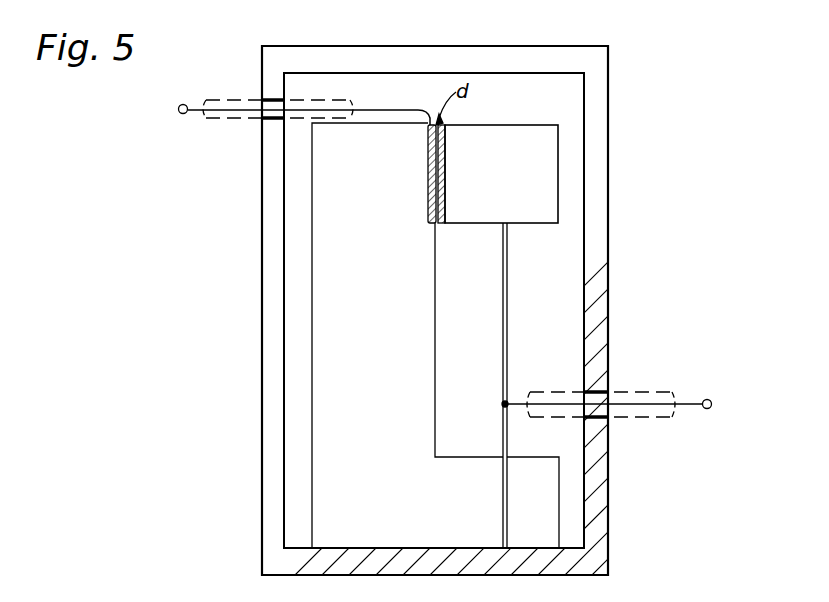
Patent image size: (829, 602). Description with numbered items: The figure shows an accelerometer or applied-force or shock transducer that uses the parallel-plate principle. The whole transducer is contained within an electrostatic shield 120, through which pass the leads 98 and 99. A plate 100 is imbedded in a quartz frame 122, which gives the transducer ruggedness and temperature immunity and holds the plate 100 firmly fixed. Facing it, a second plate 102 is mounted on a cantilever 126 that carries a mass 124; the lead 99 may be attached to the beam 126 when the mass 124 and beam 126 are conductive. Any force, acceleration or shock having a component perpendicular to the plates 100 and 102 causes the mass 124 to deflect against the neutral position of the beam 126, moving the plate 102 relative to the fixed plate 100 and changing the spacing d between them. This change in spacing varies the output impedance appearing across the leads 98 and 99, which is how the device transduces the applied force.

The lead 98 is at (180, 113).
The lead 99 is at (711, 401).
The plate 100 is at (430, 147).
The plate 102 is at (445, 142).
The electrostatic shield 120 is at (607, 518).
The quartz frame 122 is at (435, 335).
The mass 124 is at (501, 174).
The cantilever 126 is at (505, 326).